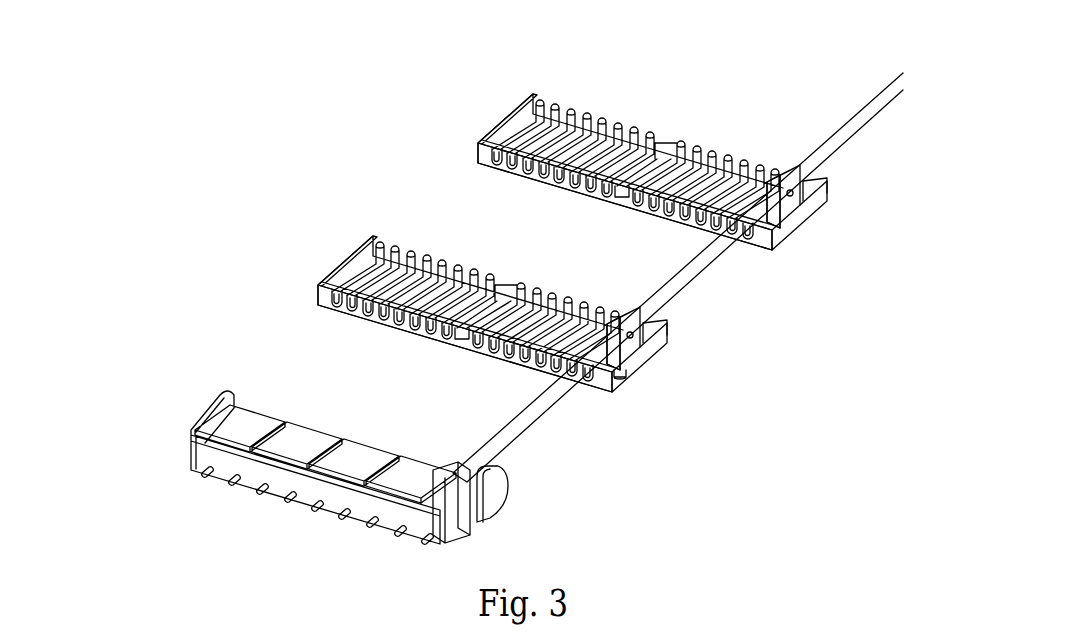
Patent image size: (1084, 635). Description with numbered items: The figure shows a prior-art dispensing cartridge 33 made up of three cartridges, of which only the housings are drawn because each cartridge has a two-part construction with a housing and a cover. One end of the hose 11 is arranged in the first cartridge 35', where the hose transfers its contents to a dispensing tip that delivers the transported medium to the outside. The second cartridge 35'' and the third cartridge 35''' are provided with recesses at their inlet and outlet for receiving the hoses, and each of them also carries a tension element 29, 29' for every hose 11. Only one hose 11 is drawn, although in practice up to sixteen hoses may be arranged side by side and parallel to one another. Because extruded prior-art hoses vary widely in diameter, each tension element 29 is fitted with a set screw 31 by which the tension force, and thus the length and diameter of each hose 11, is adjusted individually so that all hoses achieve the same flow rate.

The hose 11 is at (522, 430).
The tension element 29 is at (713, 361).
The tension element 29' is at (863, 204).
The set screw 31 is at (627, 368).
The dispensing cartridge 33 is at (222, 155).
The first cartridge 35' is at (275, 467).
The second cartridge 35'' is at (492, 261).
The third cartridge 35''' is at (707, 166).